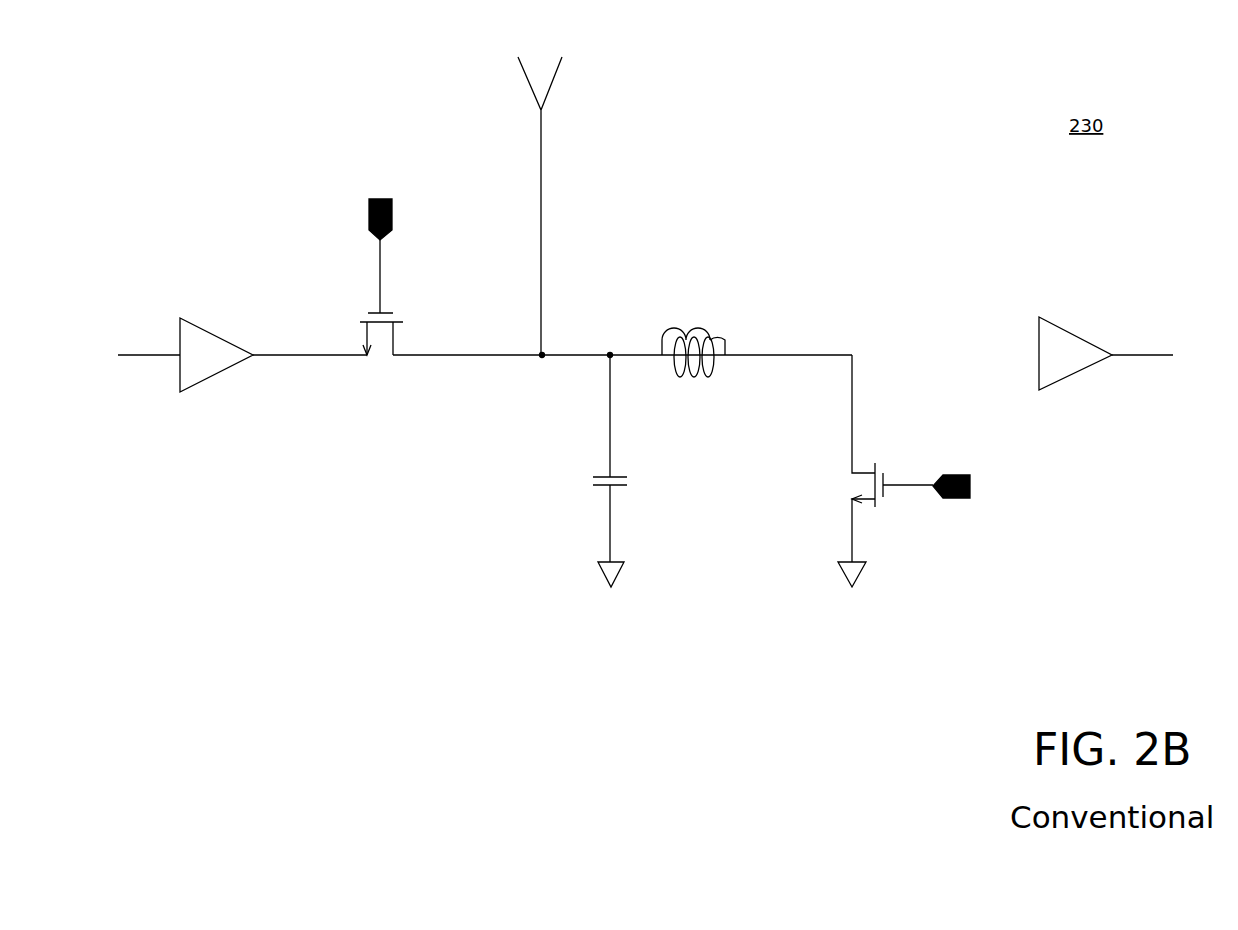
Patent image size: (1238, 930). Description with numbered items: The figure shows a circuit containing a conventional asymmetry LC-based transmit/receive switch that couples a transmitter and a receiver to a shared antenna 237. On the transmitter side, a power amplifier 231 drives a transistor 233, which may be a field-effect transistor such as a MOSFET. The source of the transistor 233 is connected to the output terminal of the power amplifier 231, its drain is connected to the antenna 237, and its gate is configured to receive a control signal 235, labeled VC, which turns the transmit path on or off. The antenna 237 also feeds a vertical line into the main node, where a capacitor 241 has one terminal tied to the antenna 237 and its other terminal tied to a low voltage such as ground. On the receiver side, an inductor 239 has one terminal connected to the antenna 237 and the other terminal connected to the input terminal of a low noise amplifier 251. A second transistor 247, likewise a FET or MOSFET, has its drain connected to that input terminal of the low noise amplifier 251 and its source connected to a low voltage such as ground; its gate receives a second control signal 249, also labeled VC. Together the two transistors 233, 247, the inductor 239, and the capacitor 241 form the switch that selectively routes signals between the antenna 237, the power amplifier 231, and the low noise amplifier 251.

The power amplifier 231 is at (176, 331).
The transistor 233 is at (368, 309).
The control signal 235 is at (368, 186).
The antenna 237 is at (519, 86).
The inductor 239 is at (680, 328).
The capacitor 241 is at (598, 473).
The transistor 247 is at (834, 468).
The control signal 249 is at (983, 468).
The low noise amplifier 251 is at (1065, 330).